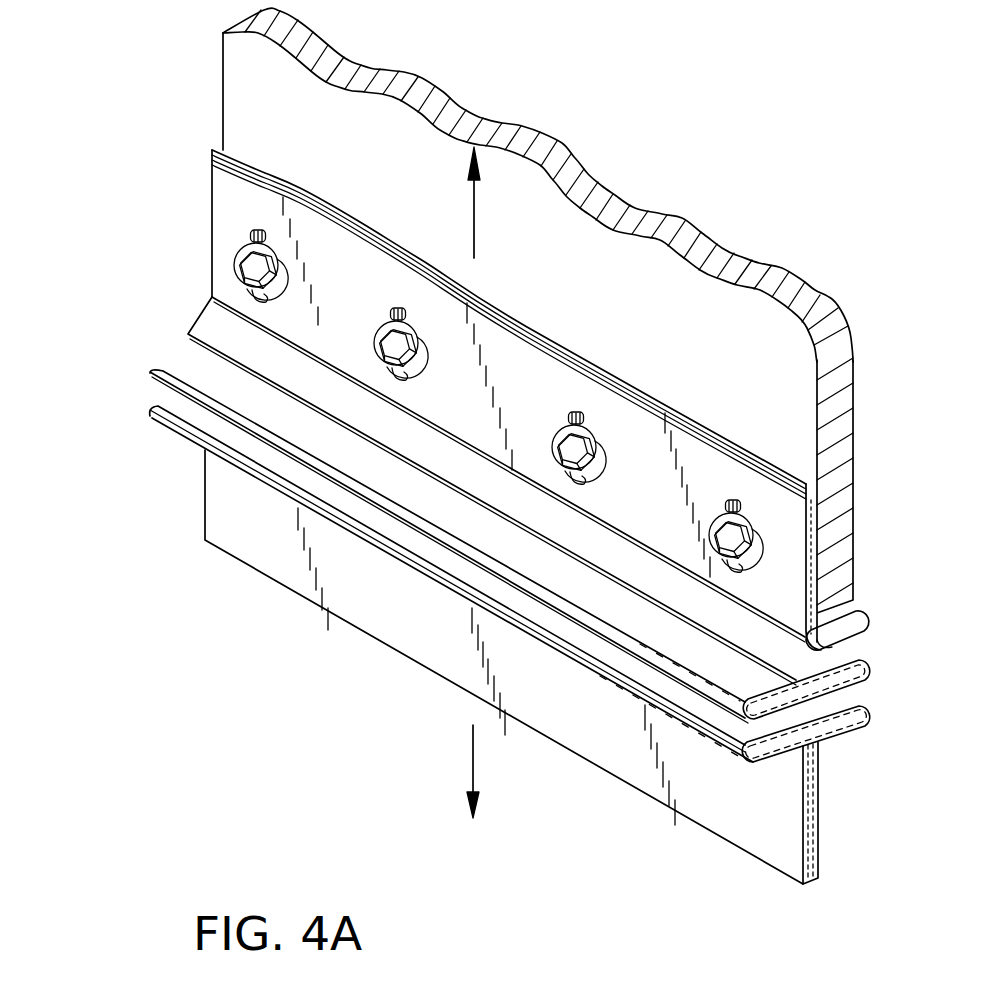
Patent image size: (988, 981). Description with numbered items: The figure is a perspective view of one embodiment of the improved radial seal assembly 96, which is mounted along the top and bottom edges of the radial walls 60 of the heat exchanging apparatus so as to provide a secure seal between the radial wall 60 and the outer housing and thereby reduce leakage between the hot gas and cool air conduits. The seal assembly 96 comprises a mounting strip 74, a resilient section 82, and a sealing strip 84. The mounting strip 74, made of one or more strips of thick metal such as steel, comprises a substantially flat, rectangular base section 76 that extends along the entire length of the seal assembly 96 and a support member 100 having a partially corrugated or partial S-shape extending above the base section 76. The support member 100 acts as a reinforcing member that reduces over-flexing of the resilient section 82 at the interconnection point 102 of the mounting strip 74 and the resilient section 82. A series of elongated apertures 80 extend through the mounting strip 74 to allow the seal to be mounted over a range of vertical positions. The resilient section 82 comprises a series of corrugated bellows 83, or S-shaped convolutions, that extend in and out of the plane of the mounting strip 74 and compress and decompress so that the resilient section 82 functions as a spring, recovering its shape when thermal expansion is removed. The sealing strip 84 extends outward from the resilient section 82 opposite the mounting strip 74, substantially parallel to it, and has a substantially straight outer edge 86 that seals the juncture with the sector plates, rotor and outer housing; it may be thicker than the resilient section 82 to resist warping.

The radial wall 60 is at (730, 307).
The mounting strip 74 is at (222, 513).
The base section 76 is at (833, 804).
The apertures 80 is at (258, 228).
The resilient section 82 is at (181, 354).
The corrugated bellows 83 is at (474, 218).
The sealing strip 84 is at (757, 487).
The outer edge 86 is at (608, 370).
The radial seal assembly 96 is at (100, 195).
The support member 100 is at (200, 320).
The interconnection point 102 is at (833, 622).